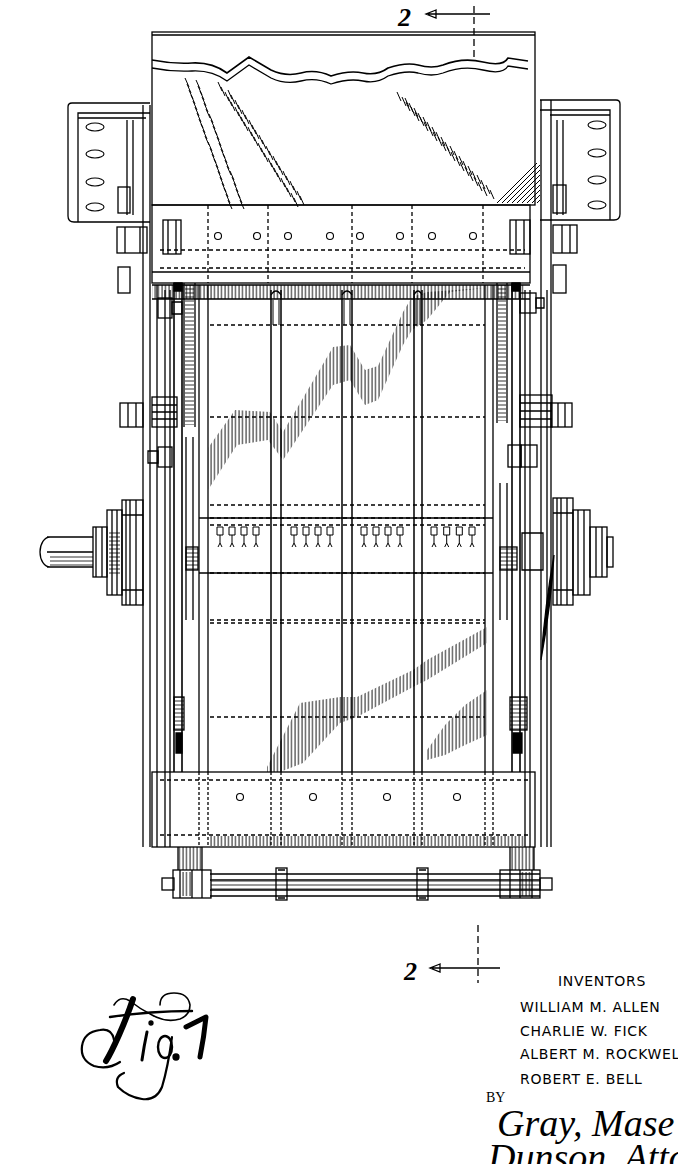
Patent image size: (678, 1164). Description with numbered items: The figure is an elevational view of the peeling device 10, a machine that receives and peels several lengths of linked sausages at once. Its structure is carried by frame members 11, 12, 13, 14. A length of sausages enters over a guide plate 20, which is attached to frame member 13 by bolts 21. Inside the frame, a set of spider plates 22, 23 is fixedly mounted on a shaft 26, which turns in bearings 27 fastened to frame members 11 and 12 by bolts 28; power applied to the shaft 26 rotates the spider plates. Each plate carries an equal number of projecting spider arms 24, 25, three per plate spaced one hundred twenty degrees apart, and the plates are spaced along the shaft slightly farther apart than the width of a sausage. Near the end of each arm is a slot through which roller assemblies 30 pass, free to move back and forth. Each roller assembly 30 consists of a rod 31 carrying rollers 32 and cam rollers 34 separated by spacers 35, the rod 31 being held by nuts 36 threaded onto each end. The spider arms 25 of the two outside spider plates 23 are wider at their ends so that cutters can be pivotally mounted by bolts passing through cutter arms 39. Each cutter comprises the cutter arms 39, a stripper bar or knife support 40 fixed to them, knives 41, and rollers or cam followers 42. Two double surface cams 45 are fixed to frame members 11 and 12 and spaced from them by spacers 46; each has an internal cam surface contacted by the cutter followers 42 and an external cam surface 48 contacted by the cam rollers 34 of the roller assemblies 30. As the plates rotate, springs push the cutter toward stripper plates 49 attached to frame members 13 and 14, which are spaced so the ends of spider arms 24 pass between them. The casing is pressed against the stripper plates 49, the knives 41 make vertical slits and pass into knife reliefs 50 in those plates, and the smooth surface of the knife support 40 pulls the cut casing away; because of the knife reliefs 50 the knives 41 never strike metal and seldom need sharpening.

The peeling device 10 is at (565, 82).
The frame member 11 is at (556, 721).
The frame member 12 is at (144, 650).
The frame member 13 is at (380, 213).
The frame member 14 is at (368, 780).
The guide plate 20 is at (342, 116).
The bolts 21 is at (328, 235).
The spider plates 22 is at (287, 849).
The spider plates 23 is at (209, 855).
The spider arms 24 is at (280, 341).
The spider arms 25 is at (203, 341).
The shaft 26 is at (67, 538).
The bearings 27 is at (103, 521).
The bolts 28 is at (112, 526).
The roller assemblies 30 is at (374, 910).
The rod 31 is at (160, 893).
The rollers 32 is at (334, 900).
The cam rollers 34 is at (165, 448).
The spacers 35 is at (222, 900).
The nuts 36 is at (162, 313).
The cutter arms 39 is at (175, 358).
The stripper bar or knife support 40 is at (200, 620).
The knives 41 is at (256, 544).
The rollers or cam followers 42 is at (172, 387).
The double surface cams 45 is at (180, 699).
The spacers 46 is at (162, 401).
The external cam surface 48 is at (180, 664).
The stripper plates 49 is at (463, 406).
The knife reliefs 50 is at (310, 510).